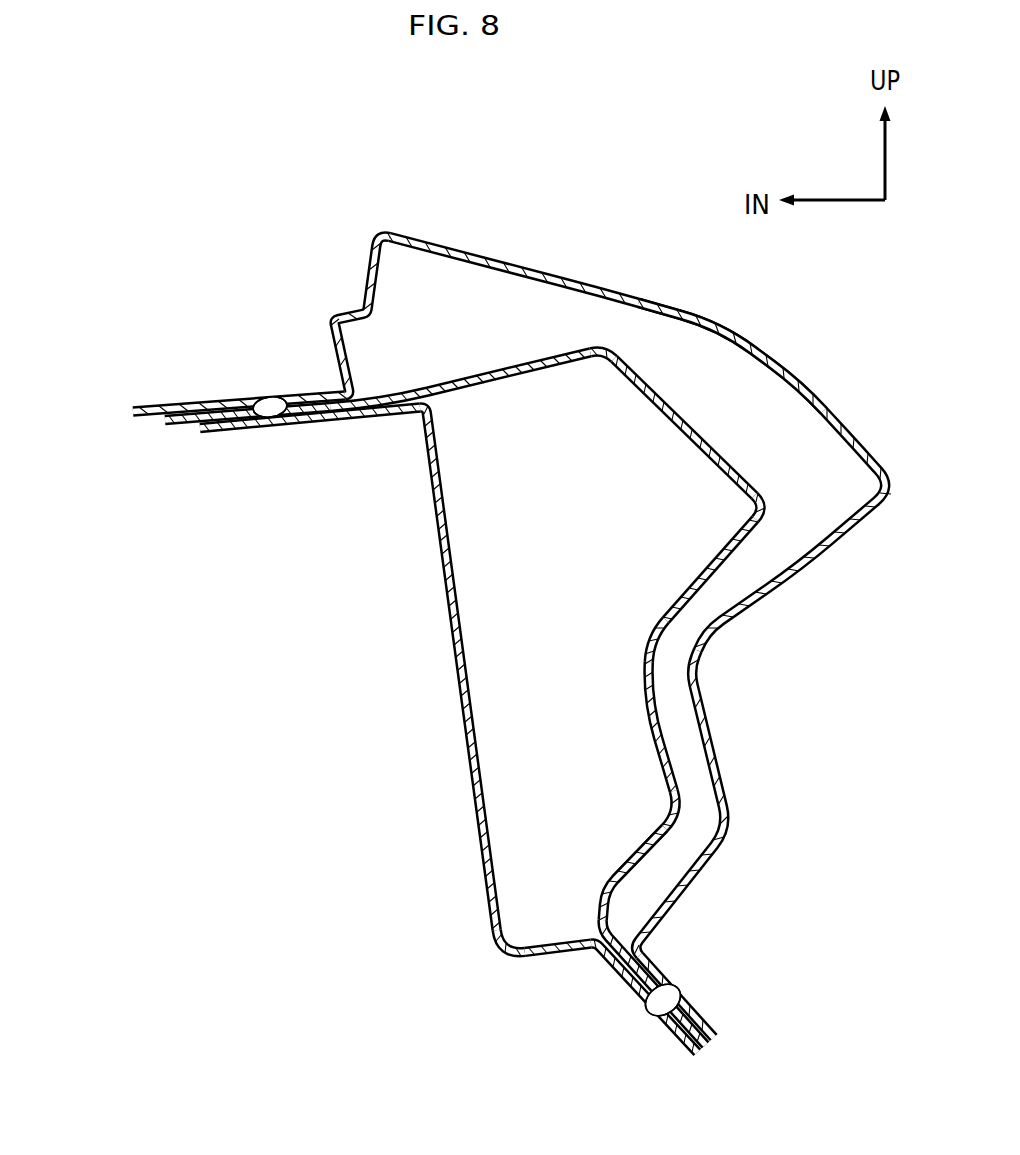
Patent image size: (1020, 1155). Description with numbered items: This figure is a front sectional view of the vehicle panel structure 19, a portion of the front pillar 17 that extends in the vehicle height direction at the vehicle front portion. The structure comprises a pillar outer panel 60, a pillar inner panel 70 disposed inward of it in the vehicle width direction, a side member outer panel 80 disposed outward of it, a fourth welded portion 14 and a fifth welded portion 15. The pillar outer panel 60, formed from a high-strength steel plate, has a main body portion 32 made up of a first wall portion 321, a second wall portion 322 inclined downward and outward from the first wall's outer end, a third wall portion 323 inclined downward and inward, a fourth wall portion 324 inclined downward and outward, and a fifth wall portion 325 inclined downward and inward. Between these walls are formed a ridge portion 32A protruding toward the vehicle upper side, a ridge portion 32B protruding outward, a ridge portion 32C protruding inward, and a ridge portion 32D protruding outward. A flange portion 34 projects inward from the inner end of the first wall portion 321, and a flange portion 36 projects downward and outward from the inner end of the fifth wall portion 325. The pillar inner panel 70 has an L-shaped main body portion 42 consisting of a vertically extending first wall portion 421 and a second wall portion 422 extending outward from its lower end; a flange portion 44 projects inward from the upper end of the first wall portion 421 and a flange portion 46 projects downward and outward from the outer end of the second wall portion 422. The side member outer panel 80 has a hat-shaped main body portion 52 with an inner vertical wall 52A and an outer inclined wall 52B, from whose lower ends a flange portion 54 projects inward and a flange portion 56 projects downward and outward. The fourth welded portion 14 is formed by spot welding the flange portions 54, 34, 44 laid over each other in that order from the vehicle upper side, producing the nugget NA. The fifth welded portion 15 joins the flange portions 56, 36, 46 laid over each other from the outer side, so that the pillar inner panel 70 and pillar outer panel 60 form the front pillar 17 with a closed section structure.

The vehicle panel structure 19 is at (66, 197).
The main body portion 52 is at (700, 310).
The vertical wall 52A is at (333, 346).
The inclined wall 52B is at (693, 880).
The flange portion 54 is at (303, 393).
The flange portion 56 is at (709, 1021).
The side member outer panel 80 is at (778, 351).
The main body portion 32 is at (520, 437).
The first wall portion 321 is at (546, 362).
The ridge portion 32A is at (607, 357).
The second wall portion 322 is at (697, 440).
The ridge portion 32B is at (762, 513).
The third wall portion 323 is at (692, 586).
The ridge portion 32C is at (643, 650).
The fourth wall portion 324 is at (645, 707).
The ridge portion 32D is at (670, 798).
The fifth wall portion 325 is at (635, 859).
The flange portion 34 is at (326, 410).
The flange portion 36 is at (622, 968).
The main body portion 42 is at (372, 905).
The first wall portion 421 is at (490, 906).
The second wall portion 422 is at (548, 954).
The flange portion 44 is at (372, 412).
The flange portion 46 is at (640, 1000).
The front pillar 17 is at (372, 800).
The pillar inner panel 70 is at (467, 805).
The pillar outer panel 60 is at (607, 868).
The fourth welded portion 14 is at (272, 432).
The fifth welded portion 15 is at (657, 1030).
The nugget NA is at (262, 416).